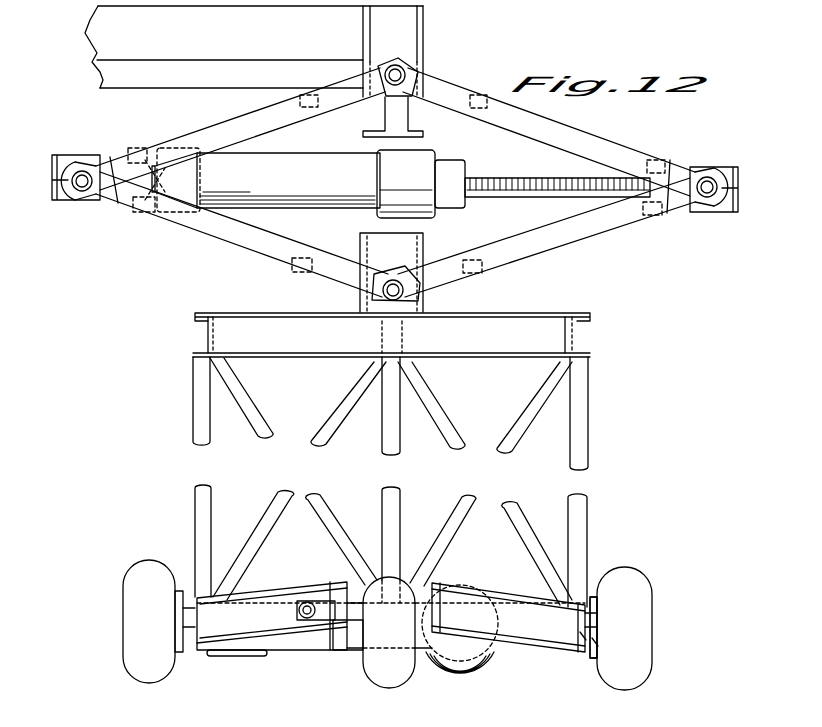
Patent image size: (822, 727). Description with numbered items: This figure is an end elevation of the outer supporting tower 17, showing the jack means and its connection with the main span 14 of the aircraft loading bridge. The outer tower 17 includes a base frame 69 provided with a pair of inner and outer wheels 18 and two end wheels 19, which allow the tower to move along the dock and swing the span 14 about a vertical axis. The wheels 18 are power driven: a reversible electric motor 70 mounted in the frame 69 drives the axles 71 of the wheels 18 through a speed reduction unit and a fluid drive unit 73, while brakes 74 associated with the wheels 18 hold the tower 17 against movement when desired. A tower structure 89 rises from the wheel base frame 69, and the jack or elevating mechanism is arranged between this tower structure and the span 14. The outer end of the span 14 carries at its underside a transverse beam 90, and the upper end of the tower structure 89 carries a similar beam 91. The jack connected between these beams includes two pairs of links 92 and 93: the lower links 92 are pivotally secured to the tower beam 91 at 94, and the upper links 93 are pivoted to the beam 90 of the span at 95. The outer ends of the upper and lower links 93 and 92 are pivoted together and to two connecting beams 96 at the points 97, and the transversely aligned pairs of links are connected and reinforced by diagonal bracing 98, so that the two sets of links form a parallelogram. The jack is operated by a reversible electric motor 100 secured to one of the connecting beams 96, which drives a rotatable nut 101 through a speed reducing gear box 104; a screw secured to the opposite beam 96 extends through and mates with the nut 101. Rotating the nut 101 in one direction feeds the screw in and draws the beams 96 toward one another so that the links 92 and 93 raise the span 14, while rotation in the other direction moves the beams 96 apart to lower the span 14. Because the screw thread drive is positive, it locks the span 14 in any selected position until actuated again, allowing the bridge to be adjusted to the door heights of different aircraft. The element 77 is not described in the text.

The main span 14 is at (92, 67).
The outer supporting tower 17 is at (190, 523).
The wheels 18 is at (128, 660).
The end wheels 19 is at (372, 672).
The base frame 69 is at (310, 650).
The reversible electric motor 70 is at (475, 660).
The axles 71 is at (583, 640).
The fluid drive unit 73 is at (455, 675).
The brakes 74 is at (597, 606).
The block 77 is at (350, 655).
The tower structure 89 is at (583, 445).
The transverse beam 90 is at (412, 122).
The beam 91 is at (420, 252).
The lower links 92 is at (225, 242).
The upper links 93 is at (582, 135).
The pivot 94 is at (410, 292).
The pivot 95 is at (405, 72).
The connecting beams 96 is at (84, 205).
The pivot points 97 is at (82, 172).
The diagonal bracing 98 is at (308, 110).
The reversible electric motor 100 is at (318, 184).
The rotatable nut 101 is at (470, 170).
The speed reducing gear box 104 is at (416, 181).